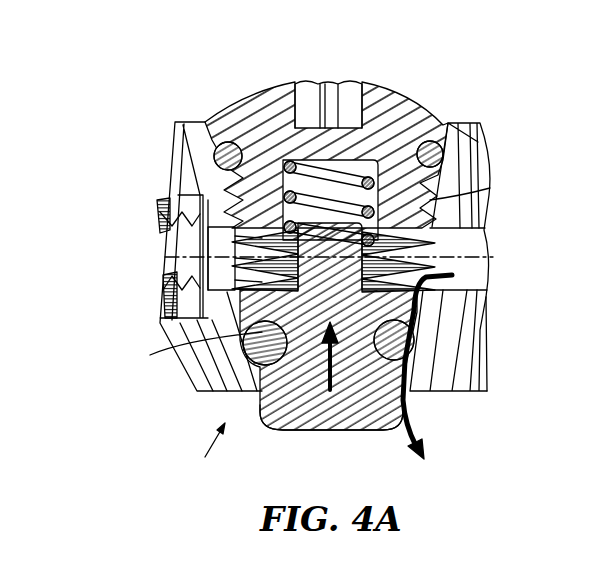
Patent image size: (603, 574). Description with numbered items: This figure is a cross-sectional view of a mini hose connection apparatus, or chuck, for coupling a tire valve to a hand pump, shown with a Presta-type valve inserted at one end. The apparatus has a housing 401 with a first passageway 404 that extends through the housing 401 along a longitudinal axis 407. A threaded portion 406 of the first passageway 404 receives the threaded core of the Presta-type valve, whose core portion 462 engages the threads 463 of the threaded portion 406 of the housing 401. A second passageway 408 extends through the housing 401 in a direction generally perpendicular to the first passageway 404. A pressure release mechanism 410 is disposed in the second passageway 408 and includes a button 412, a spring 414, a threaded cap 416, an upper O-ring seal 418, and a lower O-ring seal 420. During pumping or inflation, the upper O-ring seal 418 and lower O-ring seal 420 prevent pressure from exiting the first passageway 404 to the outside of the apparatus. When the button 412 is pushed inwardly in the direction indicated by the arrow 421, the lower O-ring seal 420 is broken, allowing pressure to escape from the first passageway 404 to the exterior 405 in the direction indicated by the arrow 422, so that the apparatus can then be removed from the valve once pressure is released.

The housing 401 is at (467, 160).
The first passageway 404 is at (482, 273).
The exterior 405 is at (353, 489).
The threaded portion 406 is at (64, 568).
The longitudinal axis 407 is at (497, 262).
The second passageway 408 is at (478, 197).
The pressure release mechanism 410 is at (202, 453).
The button 412 is at (306, 430).
The spring 414 is at (414, 106).
The threaded cap 416 is at (263, 92).
The upper O-ring seal 418 is at (212, 148).
The lower O-ring seal 420 is at (243, 340).
The arrow 421 is at (357, 400).
The arrow 422 is at (418, 412).
The core portion 462 is at (180, 248).
The threads 463 is at (190, 210).